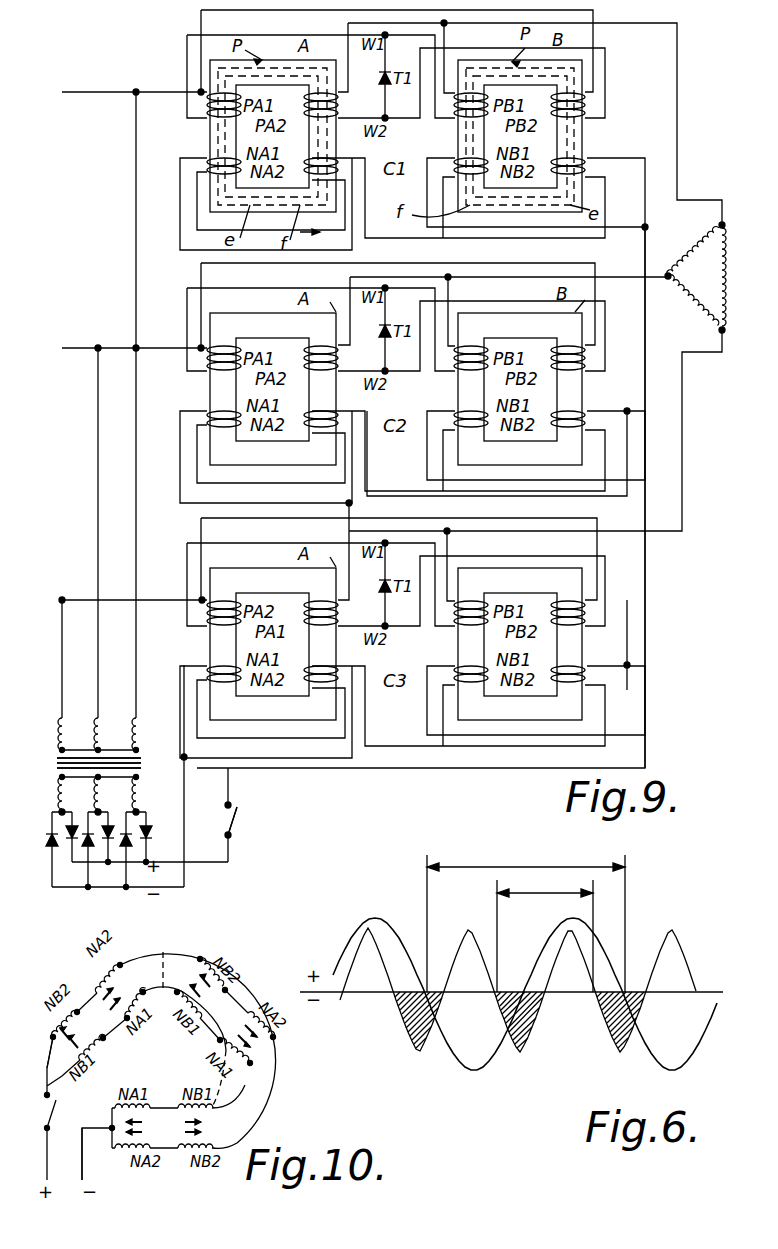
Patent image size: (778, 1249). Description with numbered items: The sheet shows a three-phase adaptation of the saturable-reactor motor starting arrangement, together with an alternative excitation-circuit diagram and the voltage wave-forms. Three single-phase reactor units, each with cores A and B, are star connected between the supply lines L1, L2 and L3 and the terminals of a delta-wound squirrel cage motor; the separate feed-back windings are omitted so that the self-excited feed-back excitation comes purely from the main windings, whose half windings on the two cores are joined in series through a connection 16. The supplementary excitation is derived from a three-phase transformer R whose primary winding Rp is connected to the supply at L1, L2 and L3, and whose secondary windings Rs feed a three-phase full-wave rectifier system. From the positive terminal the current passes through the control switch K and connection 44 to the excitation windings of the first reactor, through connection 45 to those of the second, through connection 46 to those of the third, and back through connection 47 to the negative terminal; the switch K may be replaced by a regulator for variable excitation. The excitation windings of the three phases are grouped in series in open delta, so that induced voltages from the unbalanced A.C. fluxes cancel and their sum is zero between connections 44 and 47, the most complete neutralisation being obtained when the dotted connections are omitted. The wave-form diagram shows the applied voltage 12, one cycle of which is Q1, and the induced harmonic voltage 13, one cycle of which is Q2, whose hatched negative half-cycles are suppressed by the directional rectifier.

In FIG. 6, the wave-form of applied volts 12 is at (478, 1072).
In FIG. 6, the harmonic voltage wave-form 13 is at (612, 1052).
In FIG. 9, the connection 16 is at (137, 849).
In FIG. 9, the connection 44 is at (465, 770).
In FIG. 10, the connection 44 is at (52, 1067).
In FIG. 9, the connection 45 is at (630, 360).
In FIG. 9, the connection 46 is at (632, 630).
In FIG. 9, the connection 47 is at (315, 768).
In FIG. 10, the connection 47 is at (84, 1164).
In FIG. 9, the control switch K is at (240, 820).
In FIG. 10, the control switch K is at (58, 1137).
In FIG. 9, the supply line L1 is at (134, 81).
In FIG. 9, the supply line L2 is at (134, 337).
In FIG. 9, the supply line L3 is at (134, 588).
In FIG. 9, the primary winding Rp is at (114, 734).
In FIG. 9, the three-phase transformer R is at (109, 765).
In FIG. 9, the secondary windings Rs is at (113, 793).
In FIG. 6, the complete cycle of applied voltage Q1 is at (526, 918).
In FIG. 6, the cycle of harmonic voltage Q2 is at (545, 931).